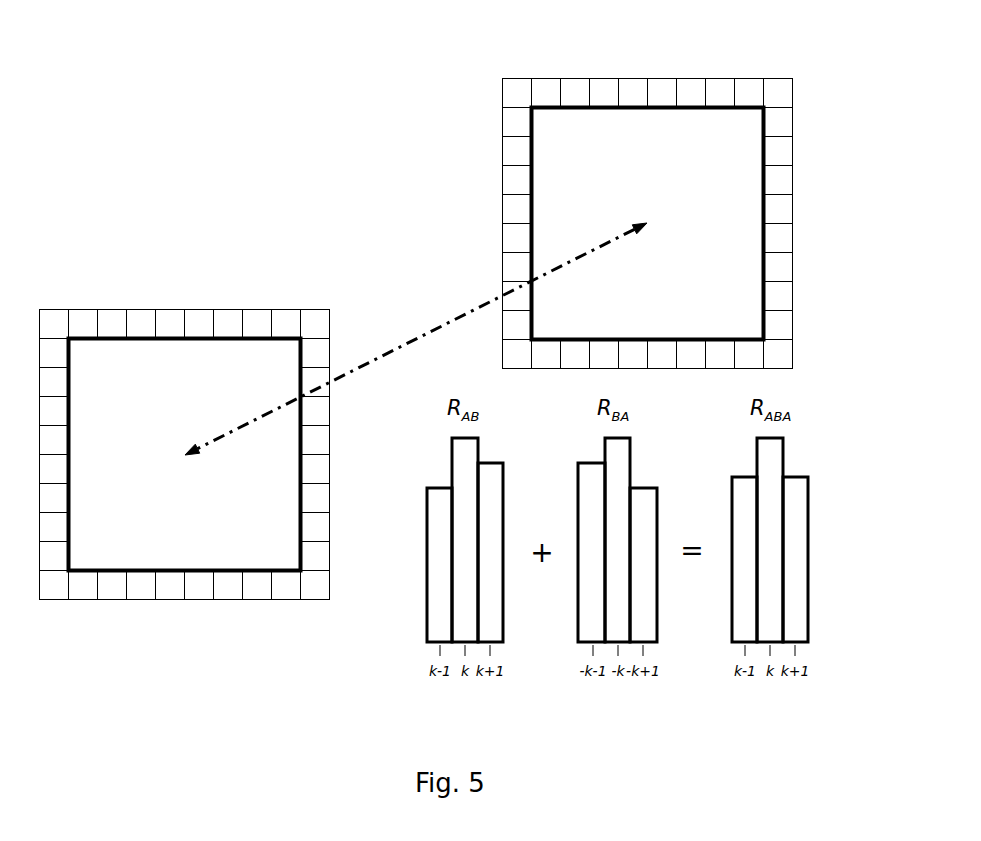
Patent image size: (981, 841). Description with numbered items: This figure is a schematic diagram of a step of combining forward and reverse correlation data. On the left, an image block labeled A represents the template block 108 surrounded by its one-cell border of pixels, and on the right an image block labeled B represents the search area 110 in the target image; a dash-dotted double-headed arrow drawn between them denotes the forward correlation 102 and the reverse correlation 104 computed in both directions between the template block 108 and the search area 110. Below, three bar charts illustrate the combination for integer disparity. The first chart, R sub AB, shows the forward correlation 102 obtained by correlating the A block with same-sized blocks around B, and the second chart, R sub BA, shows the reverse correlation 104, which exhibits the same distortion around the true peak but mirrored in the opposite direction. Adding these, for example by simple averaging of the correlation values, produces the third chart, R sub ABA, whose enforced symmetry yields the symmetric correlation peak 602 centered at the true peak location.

The template block 108 is at (216, 332).
The search area 110 is at (588, 90).
The forward correlation 102 is at (416, 339).
The reverse correlation 104 is at (410, 338).
The symmetric correlation peak 602 is at (773, 462).